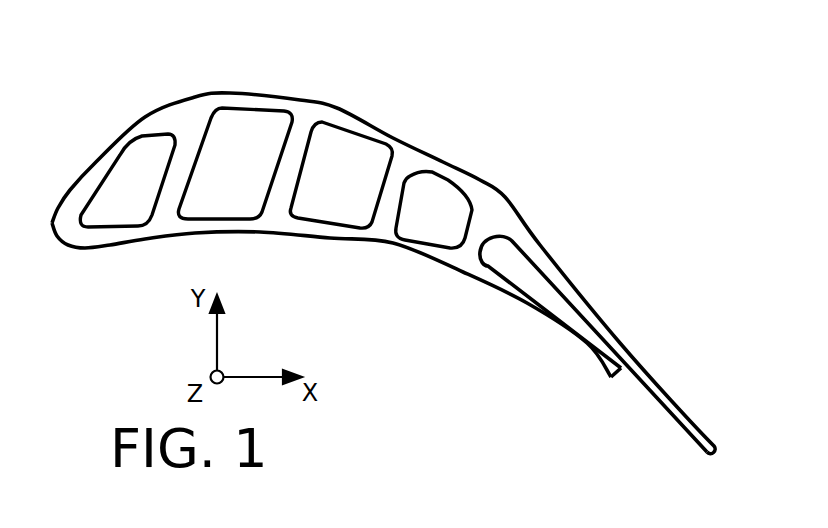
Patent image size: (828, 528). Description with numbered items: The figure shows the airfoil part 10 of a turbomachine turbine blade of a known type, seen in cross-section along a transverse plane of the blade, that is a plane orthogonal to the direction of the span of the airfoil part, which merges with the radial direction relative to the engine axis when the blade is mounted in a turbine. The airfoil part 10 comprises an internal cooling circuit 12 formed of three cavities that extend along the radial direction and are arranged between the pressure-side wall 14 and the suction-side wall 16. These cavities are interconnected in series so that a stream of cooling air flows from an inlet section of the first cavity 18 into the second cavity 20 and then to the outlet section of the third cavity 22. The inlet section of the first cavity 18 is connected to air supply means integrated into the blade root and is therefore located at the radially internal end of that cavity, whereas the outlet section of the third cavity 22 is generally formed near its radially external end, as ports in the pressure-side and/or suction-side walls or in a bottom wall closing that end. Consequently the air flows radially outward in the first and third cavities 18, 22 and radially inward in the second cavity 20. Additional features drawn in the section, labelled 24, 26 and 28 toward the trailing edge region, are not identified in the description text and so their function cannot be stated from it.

The airfoil part 10 is at (504, 184).
The internal cooling circuit 12 is at (428, 43).
The pressure-side wall 14 is at (117, 235).
The suction-side wall 16 is at (237, 95).
The first cavity 18 is at (260, 130).
The second cavity 20 is at (337, 133).
The third cavity 22 is at (440, 187).
The pressure side wall 24 is at (477, 240).
The trailing edge slot 26 is at (508, 258).
The slot outlet 28 is at (625, 365).